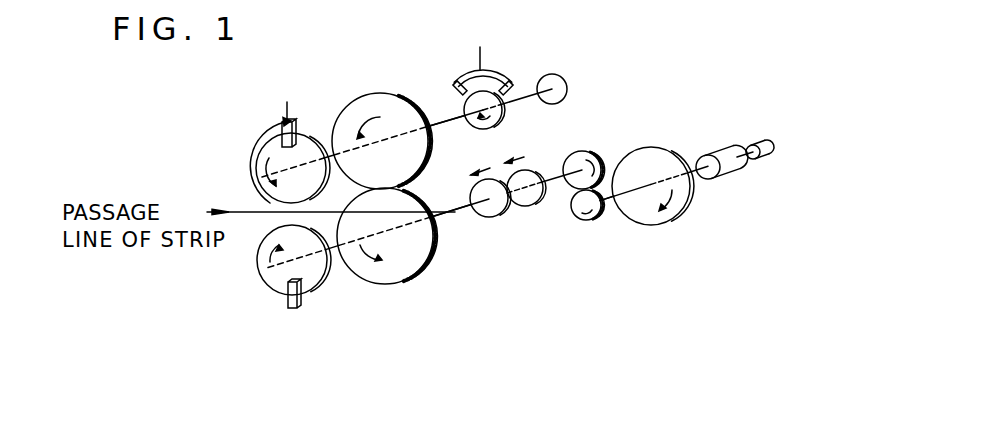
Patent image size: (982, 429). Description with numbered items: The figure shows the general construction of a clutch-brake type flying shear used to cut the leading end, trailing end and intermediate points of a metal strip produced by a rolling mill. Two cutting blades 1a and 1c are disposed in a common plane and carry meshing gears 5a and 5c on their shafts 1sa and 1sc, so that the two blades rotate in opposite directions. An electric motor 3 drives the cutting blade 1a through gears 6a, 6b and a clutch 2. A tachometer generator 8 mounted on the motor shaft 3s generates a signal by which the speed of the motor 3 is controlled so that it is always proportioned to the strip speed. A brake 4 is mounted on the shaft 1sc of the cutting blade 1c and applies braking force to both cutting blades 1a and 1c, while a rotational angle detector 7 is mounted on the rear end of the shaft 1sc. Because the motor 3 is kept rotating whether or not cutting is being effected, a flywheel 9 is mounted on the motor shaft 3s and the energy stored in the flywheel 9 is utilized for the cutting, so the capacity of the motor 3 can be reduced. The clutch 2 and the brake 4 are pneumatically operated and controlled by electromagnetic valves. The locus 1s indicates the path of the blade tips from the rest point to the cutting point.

The cutting blade 1c is at (311, 139).
The locus of tip of the cutting blades 1s is at (257, 161).
The cutting blade 1a is at (270, 277).
The meshing gear 5c is at (356, 99).
The meshing gear 5a is at (387, 284).
The brake 4 is at (453, 88).
The rotational angle detector 7 is at (566, 81).
The shaft 1sc is at (452, 120).
The shaft 1sa is at (455, 211).
The clutch 2 is at (533, 204).
The gear 6a is at (574, 152).
The gear 6b is at (577, 218).
The motor shaft 3s is at (607, 207).
The flywheel 9 is at (641, 160).
The electric motor 3 is at (717, 151).
The tachometer generator 8 is at (754, 145).